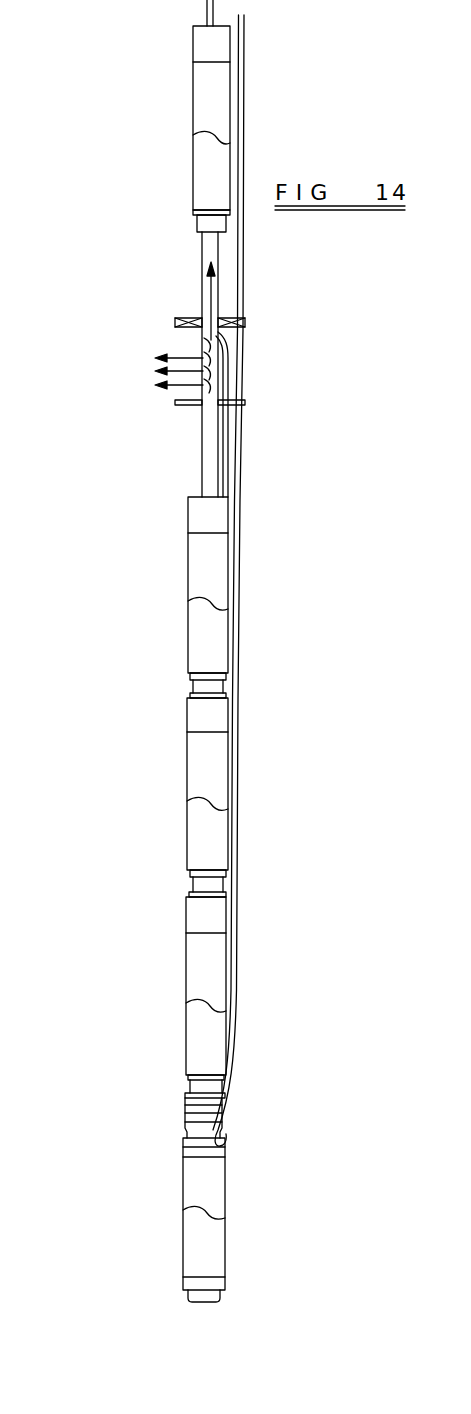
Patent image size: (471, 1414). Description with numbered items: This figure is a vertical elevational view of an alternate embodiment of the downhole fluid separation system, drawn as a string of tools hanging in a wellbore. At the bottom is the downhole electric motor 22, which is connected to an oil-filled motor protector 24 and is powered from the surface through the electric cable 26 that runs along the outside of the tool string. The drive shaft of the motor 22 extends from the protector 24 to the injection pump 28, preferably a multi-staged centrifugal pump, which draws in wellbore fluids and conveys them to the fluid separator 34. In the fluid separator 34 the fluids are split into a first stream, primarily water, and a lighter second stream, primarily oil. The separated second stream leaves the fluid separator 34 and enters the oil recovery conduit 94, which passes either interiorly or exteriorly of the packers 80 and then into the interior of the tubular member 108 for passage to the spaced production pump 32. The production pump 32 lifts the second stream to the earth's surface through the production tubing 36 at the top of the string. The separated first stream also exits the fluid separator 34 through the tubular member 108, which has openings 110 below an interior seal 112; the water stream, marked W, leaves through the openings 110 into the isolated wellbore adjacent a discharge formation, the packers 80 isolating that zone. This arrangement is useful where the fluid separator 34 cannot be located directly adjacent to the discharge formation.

The downhole electric motor 22 is at (238, 1218).
The oil-filled motor protector 24 is at (238, 990).
The cable 26 is at (253, 357).
The injection pump 28 is at (240, 775).
The production pump 32 is at (242, 108).
The fluid separator 34 is at (242, 547).
The production tubing 36 is at (208, 2).
The packer 80 is at (250, 318).
The oil recovery conduit 94 is at (243, 447).
The tubular member 108 is at (202, 467).
The openings 110 is at (222, 384).
The interior seal 112 is at (215, 357).
The water flow W is at (166, 371).